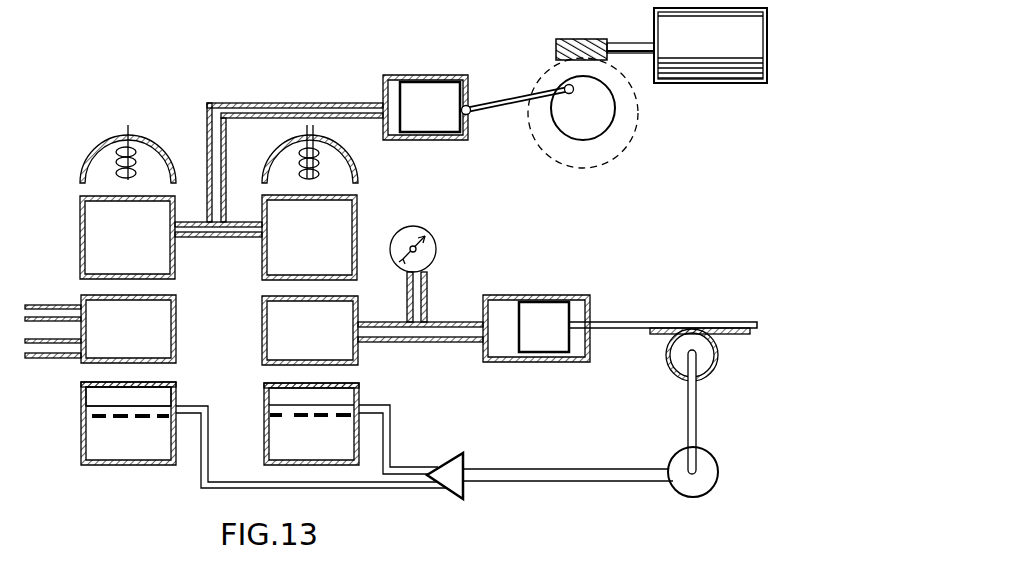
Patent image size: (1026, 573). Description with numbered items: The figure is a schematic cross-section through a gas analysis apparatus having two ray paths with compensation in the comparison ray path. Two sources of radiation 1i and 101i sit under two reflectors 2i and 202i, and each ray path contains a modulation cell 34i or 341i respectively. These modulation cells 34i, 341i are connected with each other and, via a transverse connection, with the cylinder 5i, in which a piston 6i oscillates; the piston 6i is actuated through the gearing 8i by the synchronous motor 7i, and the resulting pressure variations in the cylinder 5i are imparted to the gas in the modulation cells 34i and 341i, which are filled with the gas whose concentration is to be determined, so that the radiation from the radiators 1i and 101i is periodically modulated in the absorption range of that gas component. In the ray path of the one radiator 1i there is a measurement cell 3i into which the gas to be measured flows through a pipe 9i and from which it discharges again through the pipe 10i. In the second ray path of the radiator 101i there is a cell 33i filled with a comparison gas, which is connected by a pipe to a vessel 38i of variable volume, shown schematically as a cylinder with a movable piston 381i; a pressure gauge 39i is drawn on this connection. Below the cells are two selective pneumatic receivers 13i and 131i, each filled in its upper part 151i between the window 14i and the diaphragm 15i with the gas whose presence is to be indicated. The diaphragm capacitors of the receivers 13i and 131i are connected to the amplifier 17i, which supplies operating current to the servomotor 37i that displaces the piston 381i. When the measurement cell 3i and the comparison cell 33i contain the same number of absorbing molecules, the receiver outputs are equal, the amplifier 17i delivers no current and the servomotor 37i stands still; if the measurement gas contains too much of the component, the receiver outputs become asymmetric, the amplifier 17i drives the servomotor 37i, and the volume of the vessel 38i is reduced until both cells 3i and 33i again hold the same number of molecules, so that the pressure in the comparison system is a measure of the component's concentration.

The source of radiation 1i is at (136, 152).
The reflector 2i is at (112, 143).
The measurement cell 3i is at (160, 326).
The cylinder 5i is at (395, 88).
The piston 6i is at (443, 88).
The synchronous motor 7i is at (720, 80).
The gearing 8i is at (605, 58).
The pipe 9i is at (42, 306).
The pipe 10i is at (52, 358).
The selective pneumatic receiver 13i is at (97, 438).
The window 14i is at (107, 383).
The diaphragm 15i is at (115, 405).
The amplifier 17i is at (424, 459).
The comparison cell 33i is at (272, 323).
The modulation cell 34i is at (92, 225).
The servomotor 37i is at (709, 472).
The vessel 38i is at (503, 304).
The pressure gauge 39i is at (417, 229).
The source of radiation 101i is at (322, 154).
The selective pneumatic receiver 131i is at (290, 440).
The upper part 151i is at (177, 391).
The reflector 202i is at (292, 145).
The modulation cell 341i is at (270, 261).
The movable piston 381i is at (551, 308).